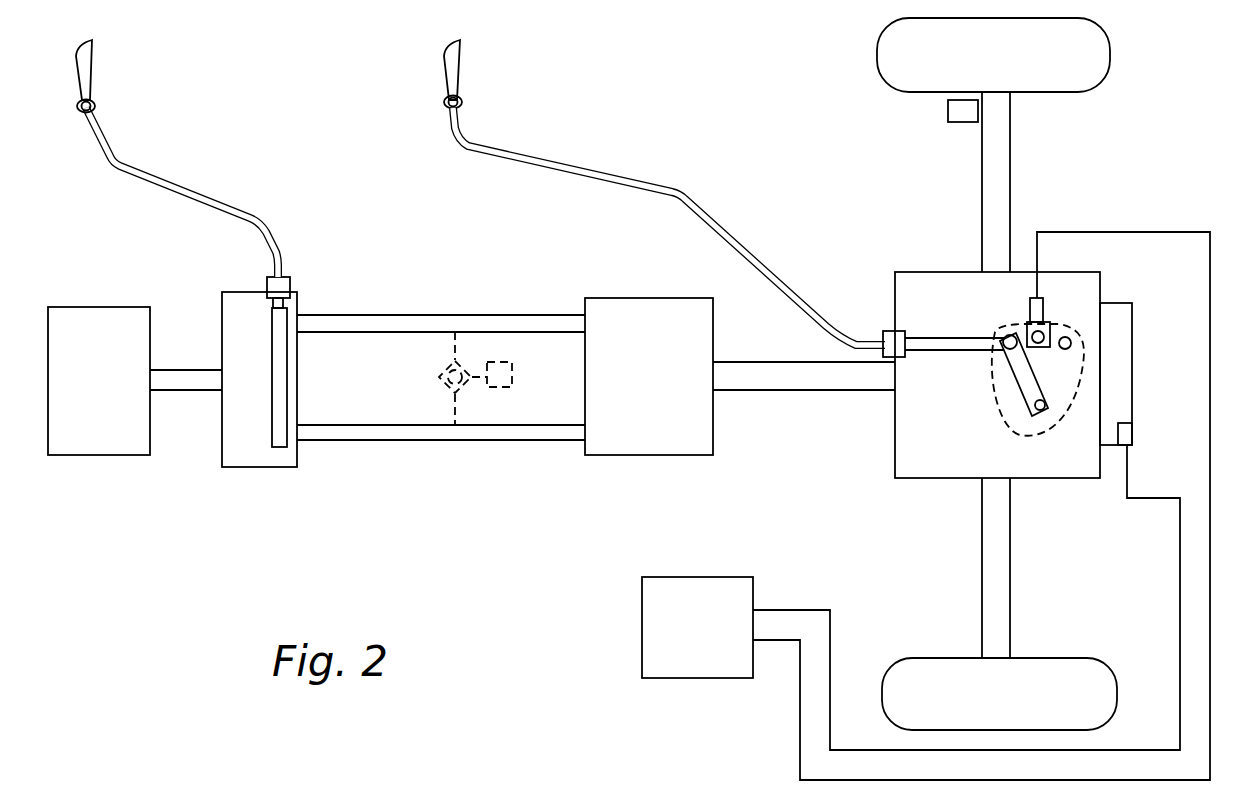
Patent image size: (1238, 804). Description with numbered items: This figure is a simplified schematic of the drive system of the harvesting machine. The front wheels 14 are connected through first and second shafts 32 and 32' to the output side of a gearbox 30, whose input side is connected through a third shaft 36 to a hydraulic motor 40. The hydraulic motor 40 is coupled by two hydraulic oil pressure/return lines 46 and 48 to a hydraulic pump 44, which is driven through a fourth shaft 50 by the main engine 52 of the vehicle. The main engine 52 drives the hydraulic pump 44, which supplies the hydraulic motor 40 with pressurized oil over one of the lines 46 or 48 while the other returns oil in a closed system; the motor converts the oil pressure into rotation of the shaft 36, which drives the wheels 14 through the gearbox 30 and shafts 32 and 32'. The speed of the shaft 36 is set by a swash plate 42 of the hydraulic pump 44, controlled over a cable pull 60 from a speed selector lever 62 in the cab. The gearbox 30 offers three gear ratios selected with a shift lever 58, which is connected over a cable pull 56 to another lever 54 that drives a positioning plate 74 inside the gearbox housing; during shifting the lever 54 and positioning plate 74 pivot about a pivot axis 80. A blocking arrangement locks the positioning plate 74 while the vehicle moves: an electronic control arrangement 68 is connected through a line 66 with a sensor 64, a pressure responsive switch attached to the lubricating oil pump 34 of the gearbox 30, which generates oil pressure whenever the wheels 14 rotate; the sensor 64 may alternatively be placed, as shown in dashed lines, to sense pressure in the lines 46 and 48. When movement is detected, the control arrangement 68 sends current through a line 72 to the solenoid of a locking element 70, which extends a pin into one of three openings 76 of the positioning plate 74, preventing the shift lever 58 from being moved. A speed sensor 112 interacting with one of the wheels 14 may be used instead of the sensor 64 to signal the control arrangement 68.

The front wheels 14 is at (1022, 66).
The gearbox 30 is at (920, 398).
The first shaft 32 is at (1025, 182).
The second shaft 32' is at (1032, 568).
The lubricating oil pump 34 is at (1133, 345).
The third shaft 36 is at (772, 392).
The hydraulic motor 40 is at (634, 361).
The swash plate 42 is at (279, 447).
The hydraulic pump 44 is at (231, 363).
The hydraulic oil pressure/return line 46 is at (430, 328).
The hydraulic oil pressure/return line 48 is at (428, 441).
The fourth shaft 50 is at (183, 393).
The main engine 52 is at (78, 371).
The lever 54 is at (1023, 387).
The cable pull 56 is at (920, 336).
The shift lever 58 is at (460, 72).
The cable pull 60 is at (172, 185).
The speed selector lever 62 is at (93, 80).
The sensor 64 is at (488, 362).
The line 66 is at (1140, 505).
The electronic control arrangement 68 is at (675, 636).
The locking element 70 is at (1027, 325).
The line 72 is at (1087, 232).
The positioning plate 74 is at (1085, 397).
The openings 76 is at (1065, 337).
The pivot axis 80 is at (1041, 411).
The speed sensor 112 is at (948, 110).